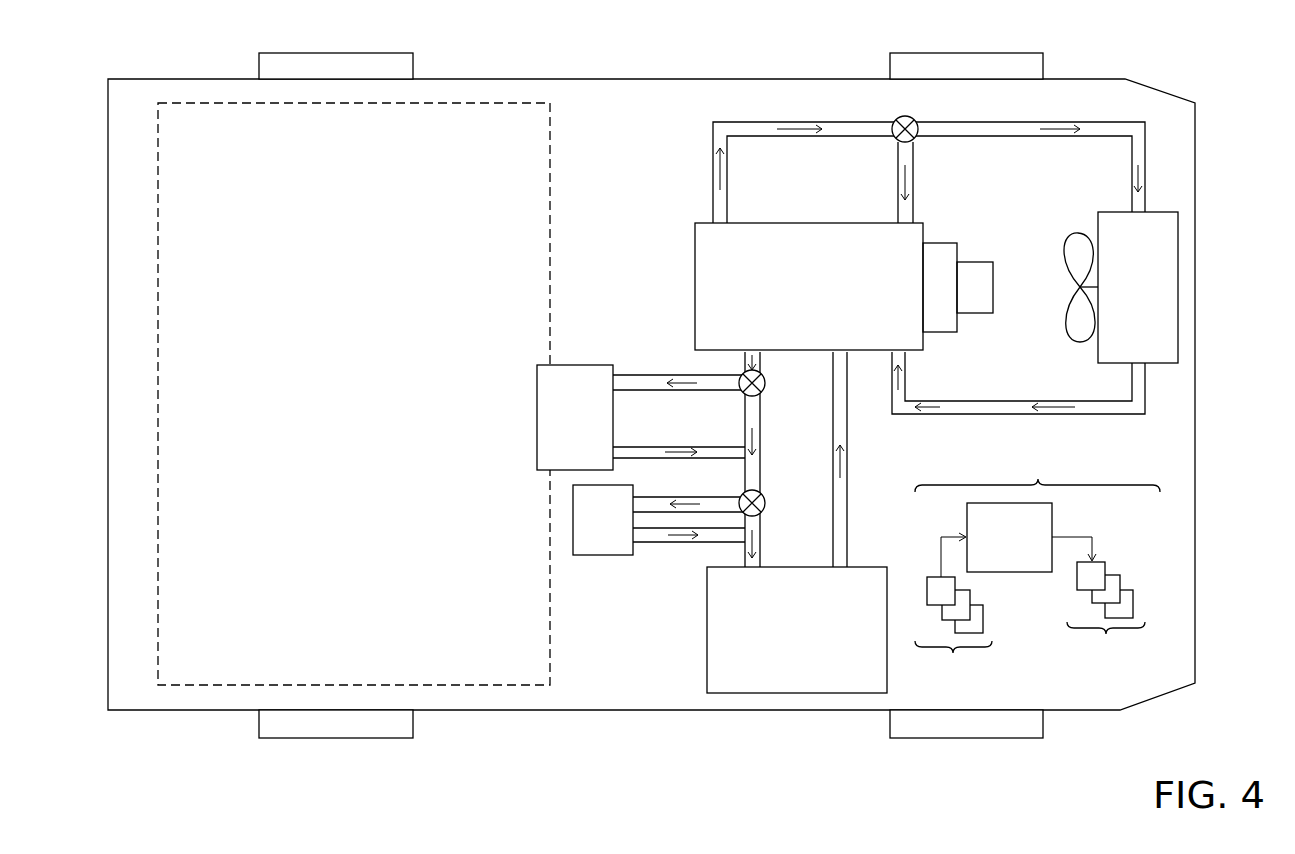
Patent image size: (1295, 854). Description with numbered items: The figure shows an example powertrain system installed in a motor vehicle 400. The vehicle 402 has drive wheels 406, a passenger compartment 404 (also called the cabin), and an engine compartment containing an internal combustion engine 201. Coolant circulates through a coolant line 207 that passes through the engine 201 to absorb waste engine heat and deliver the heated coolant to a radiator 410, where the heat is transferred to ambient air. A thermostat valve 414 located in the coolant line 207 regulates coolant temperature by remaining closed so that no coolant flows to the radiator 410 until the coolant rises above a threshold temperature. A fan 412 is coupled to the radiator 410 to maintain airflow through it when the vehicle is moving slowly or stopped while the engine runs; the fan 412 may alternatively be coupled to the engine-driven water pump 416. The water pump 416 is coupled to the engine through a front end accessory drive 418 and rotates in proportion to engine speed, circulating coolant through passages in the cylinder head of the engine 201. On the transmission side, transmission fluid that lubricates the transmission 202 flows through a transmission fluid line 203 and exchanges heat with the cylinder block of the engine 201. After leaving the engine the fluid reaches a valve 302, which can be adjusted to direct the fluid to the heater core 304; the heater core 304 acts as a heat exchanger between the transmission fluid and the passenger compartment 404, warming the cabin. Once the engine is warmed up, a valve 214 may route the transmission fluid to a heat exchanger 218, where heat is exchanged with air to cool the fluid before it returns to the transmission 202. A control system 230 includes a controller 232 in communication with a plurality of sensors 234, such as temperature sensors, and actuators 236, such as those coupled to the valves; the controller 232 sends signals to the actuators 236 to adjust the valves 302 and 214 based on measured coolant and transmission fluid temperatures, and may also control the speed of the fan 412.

The motor vehicle 400 is at (1176, 75).
The vehicle 402 is at (588, 79).
The drive wheels 406 is at (338, 53).
The passenger compartment 404 is at (297, 434).
The internal combustion engine 201 is at (869, 299).
The coolant line 207 is at (972, 122).
The thermostat valve 414 is at (898, 118).
The engine-driven water pump 416 is at (937, 243).
The front end accessory drive 418 is at (975, 313).
The radiator 410 is at (1155, 298).
The fan 412 is at (1066, 253).
The valve 302 is at (765, 388).
The valve 214 is at (765, 508).
The heater core 304 is at (592, 429).
The heat exchanger 218 is at (620, 531).
The transmission fluid line 203 is at (848, 512).
The transmission 202 is at (780, 654).
The control system 230 is at (1037, 567).
The controller 232 is at (1027, 550).
The sensors 234 is at (955, 617).
The actuators 236 is at (1106, 609).